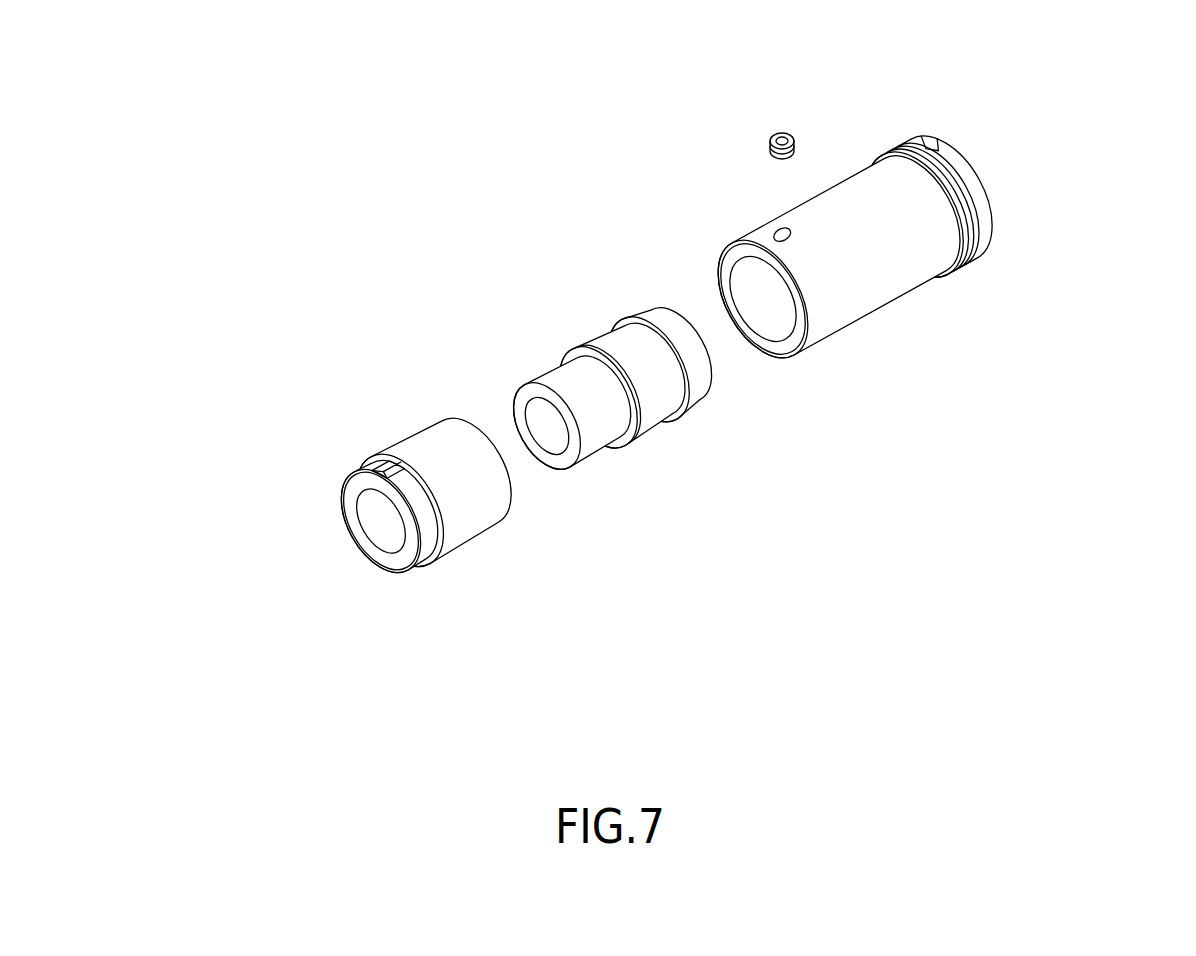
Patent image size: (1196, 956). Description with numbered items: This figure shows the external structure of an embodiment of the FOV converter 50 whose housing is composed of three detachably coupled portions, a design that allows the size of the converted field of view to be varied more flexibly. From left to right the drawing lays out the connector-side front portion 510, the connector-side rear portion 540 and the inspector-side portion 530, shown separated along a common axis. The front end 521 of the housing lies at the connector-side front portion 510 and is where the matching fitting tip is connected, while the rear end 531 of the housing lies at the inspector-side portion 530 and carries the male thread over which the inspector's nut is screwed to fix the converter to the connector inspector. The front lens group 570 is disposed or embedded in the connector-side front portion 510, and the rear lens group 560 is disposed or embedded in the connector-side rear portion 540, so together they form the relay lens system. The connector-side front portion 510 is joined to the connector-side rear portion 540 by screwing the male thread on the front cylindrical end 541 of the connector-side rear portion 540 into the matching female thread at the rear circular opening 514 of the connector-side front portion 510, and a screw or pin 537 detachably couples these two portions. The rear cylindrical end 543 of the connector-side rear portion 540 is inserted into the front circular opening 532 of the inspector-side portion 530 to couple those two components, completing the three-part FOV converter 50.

The FOV converter 50 is at (413, 143).
The connector-side front portion 510 is at (455, 533).
The rear circular opening 514 is at (513, 488).
The front end 521 is at (377, 457).
The inspector-side portion 530 is at (742, 227).
The rear end 531 is at (975, 235).
The front circular opening 532 is at (767, 322).
The screw or pin 537 is at (797, 146).
The connector-side rear portion 540 is at (652, 420).
The front cylindrical end 541 is at (593, 420).
The rear cylindrical end 543 is at (697, 365).
The rear lens group 560 is at (562, 437).
The front lens group 570 is at (397, 532).